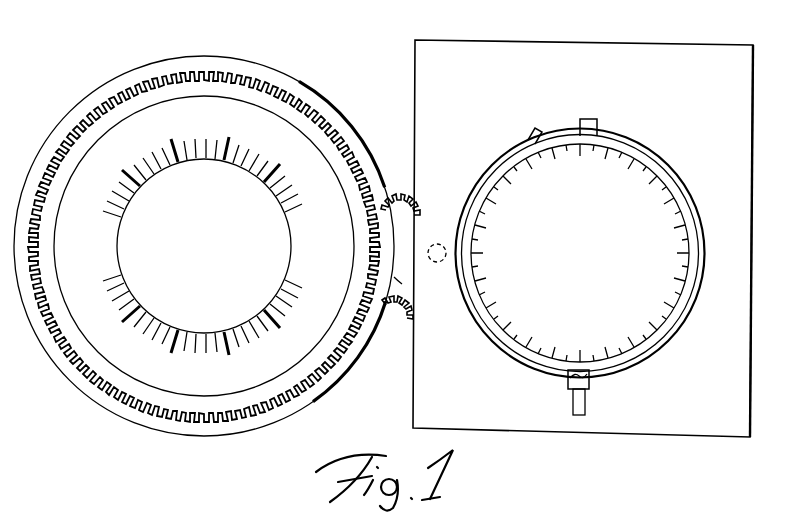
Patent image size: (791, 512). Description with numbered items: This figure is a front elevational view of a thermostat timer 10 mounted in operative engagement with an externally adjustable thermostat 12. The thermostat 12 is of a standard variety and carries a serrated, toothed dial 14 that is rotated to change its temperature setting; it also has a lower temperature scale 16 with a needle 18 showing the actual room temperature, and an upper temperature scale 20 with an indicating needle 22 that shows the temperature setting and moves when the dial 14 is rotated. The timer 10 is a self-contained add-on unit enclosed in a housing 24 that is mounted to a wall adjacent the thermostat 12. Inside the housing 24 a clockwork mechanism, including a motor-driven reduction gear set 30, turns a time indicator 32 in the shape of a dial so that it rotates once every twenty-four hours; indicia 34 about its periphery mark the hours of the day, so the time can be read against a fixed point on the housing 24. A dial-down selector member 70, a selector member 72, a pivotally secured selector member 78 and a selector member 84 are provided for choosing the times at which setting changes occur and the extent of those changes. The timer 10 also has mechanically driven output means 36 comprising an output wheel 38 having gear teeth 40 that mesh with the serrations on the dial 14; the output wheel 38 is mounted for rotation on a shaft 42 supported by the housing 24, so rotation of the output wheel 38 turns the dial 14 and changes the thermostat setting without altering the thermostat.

The thermostat timer 10 is at (580, 41).
The thermostat 12 is at (213, 54).
The dial 14 is at (138, 82).
The lower temperature scale 16 is at (172, 385).
The needle 18 is at (238, 338).
The upper temperature scale 20 is at (280, 125).
The indicating needle 22 is at (243, 149).
The housing 24 is at (652, 66).
The reduction gear set 30 is at (5, 500).
The time indicator 32 is at (658, 240).
The indicia 34 is at (638, 172).
The output means 36 is at (399, 192).
The output wheel 38 is at (394, 277).
The gear teeth 40 is at (382, 296).
The shaft 42 is at (437, 244).
The dial-down selector member 70 is at (600, 124).
The selector member 72 is at (591, 382).
The selector member 78 is at (530, 136).
The selector member 84 is at (580, 417).